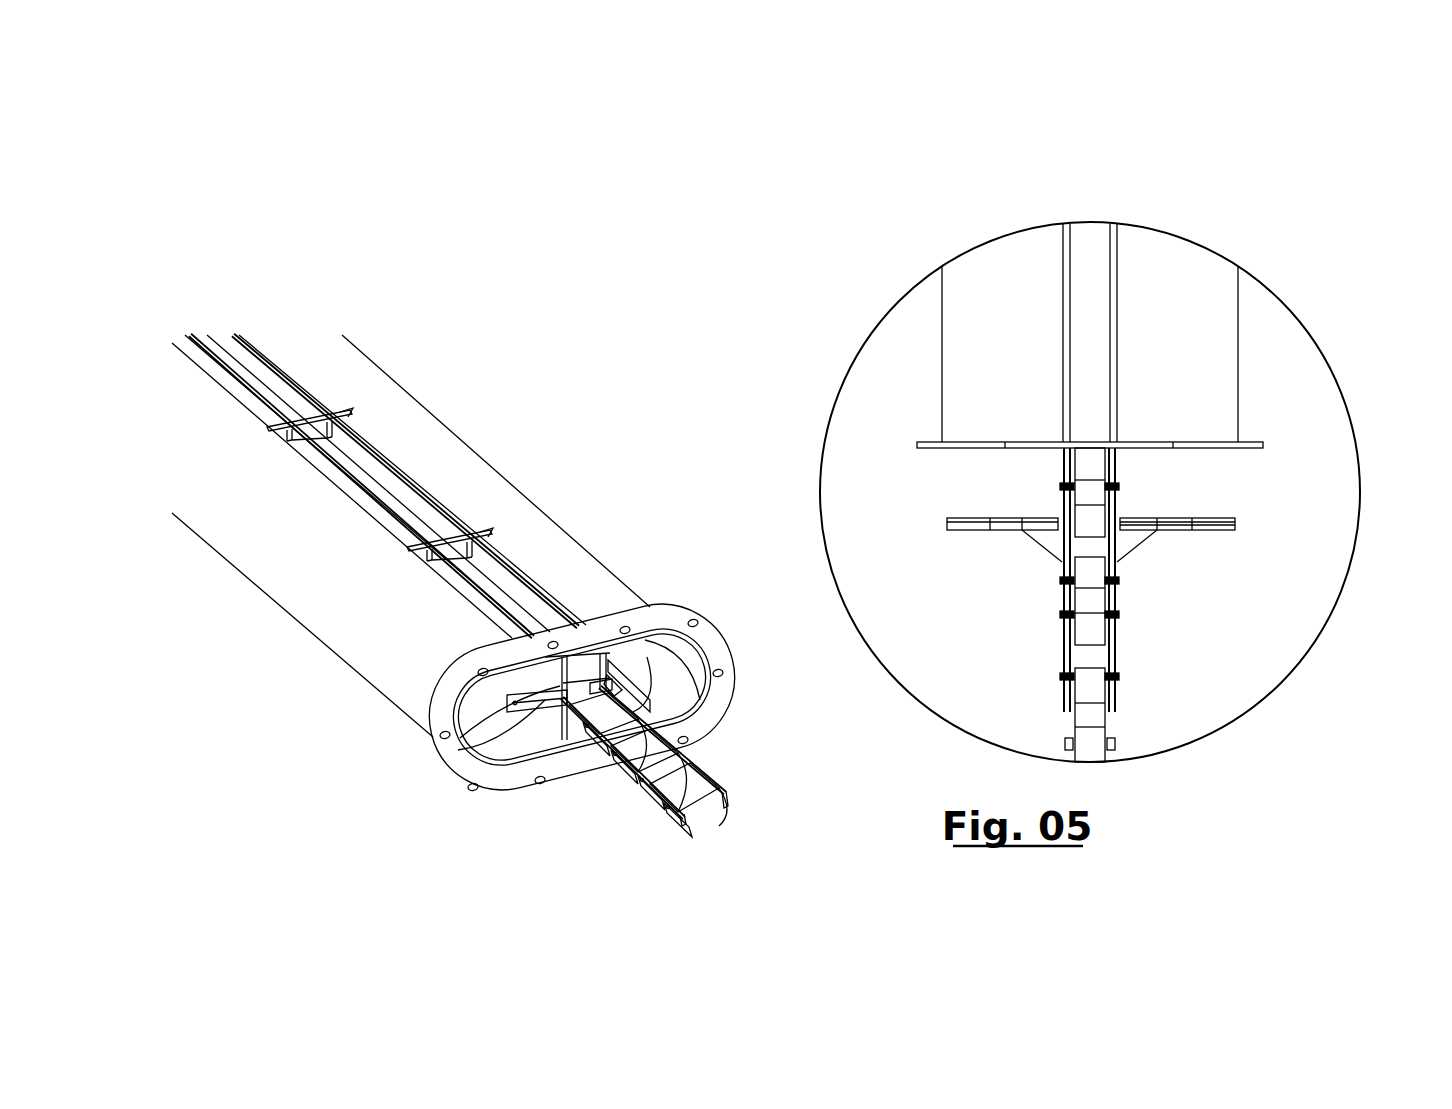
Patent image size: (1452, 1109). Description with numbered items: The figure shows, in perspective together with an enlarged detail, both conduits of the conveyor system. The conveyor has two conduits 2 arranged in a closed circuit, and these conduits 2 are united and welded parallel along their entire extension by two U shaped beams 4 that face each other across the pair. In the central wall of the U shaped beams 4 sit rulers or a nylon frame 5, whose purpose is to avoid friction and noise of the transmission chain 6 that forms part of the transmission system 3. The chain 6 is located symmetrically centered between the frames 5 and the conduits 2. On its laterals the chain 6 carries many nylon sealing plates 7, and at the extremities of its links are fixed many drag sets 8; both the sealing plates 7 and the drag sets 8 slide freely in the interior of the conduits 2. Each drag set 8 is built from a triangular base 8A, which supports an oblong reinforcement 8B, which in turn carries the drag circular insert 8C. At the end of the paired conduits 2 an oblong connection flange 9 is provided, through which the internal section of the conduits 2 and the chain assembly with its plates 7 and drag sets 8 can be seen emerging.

The conduit 2 is at (363, 583).
The transmission system 3 is at (612, 690).
The U shaped beam 4 is at (370, 478).
The nylon frame 5 is at (598, 688).
The transmission chain 6 is at (680, 780).
The nylon sealing plate 7 is at (657, 800).
The drag set 8 is at (540, 713).
The triangular base 8A is at (1130, 545).
The oblong reinforcement 8B is at (1237, 527).
The drag circular insert 8C is at (650, 708).
The oblong connection flange 9 is at (450, 756).